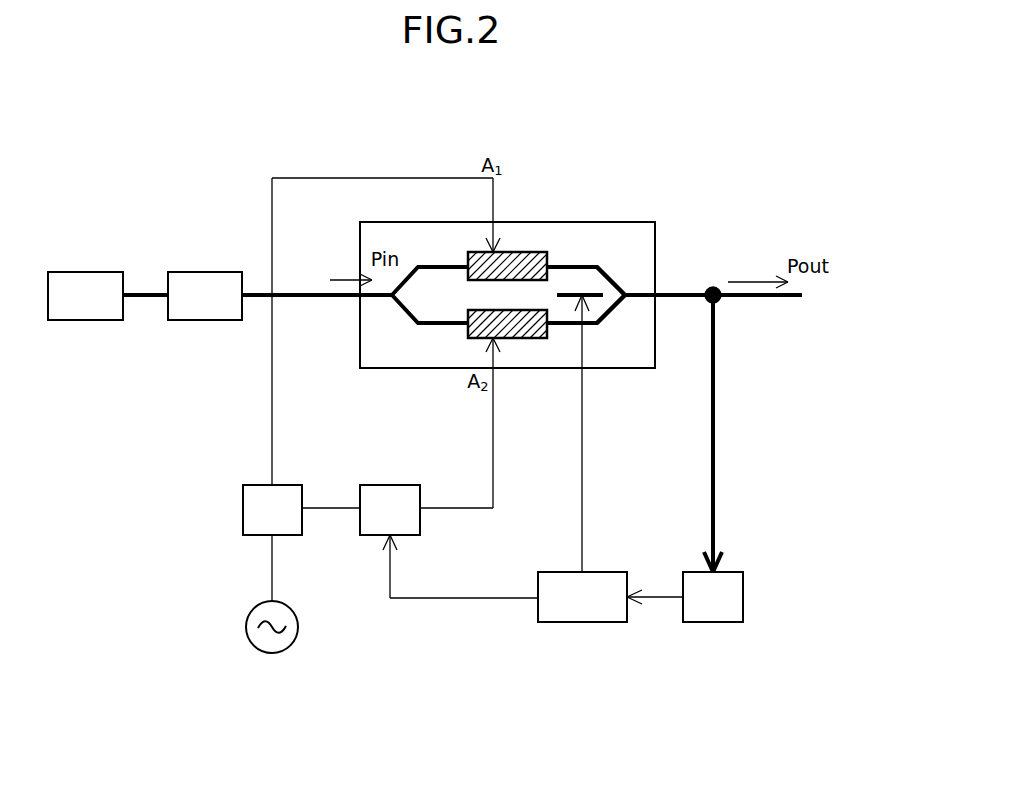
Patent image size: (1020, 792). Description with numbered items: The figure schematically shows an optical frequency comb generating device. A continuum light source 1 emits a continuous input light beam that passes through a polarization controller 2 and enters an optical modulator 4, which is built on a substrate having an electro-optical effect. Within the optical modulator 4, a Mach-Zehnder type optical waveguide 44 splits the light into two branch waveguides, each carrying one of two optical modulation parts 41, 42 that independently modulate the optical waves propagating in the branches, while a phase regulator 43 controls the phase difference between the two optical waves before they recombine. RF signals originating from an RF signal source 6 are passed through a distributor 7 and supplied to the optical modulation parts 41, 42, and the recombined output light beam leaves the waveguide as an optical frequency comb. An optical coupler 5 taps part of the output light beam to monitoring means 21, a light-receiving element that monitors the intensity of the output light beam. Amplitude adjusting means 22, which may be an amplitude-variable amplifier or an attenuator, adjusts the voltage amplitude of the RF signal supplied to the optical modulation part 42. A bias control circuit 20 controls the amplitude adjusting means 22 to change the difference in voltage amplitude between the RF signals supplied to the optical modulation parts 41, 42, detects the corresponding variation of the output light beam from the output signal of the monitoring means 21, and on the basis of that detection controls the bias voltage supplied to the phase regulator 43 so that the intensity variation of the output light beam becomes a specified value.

The continuum light source 1 is at (86, 272).
The polarization controller 2 is at (205, 272).
The optical modulator 4 is at (592, 222).
The optical coupler 5 is at (721, 301).
The RF signal source 6 is at (292, 648).
The distributor 7 is at (243, 512).
The bias control circuit 20 is at (582, 622).
The monitoring means 21 is at (745, 597).
The amplitude adjusting means 22 is at (389, 484).
The optical modulation part 41 is at (525, 263).
The optical modulation part 42 is at (522, 327).
The phase regulator 43 is at (587, 294).
The Mach-Zehnder type optical waveguide 44 is at (621, 277).